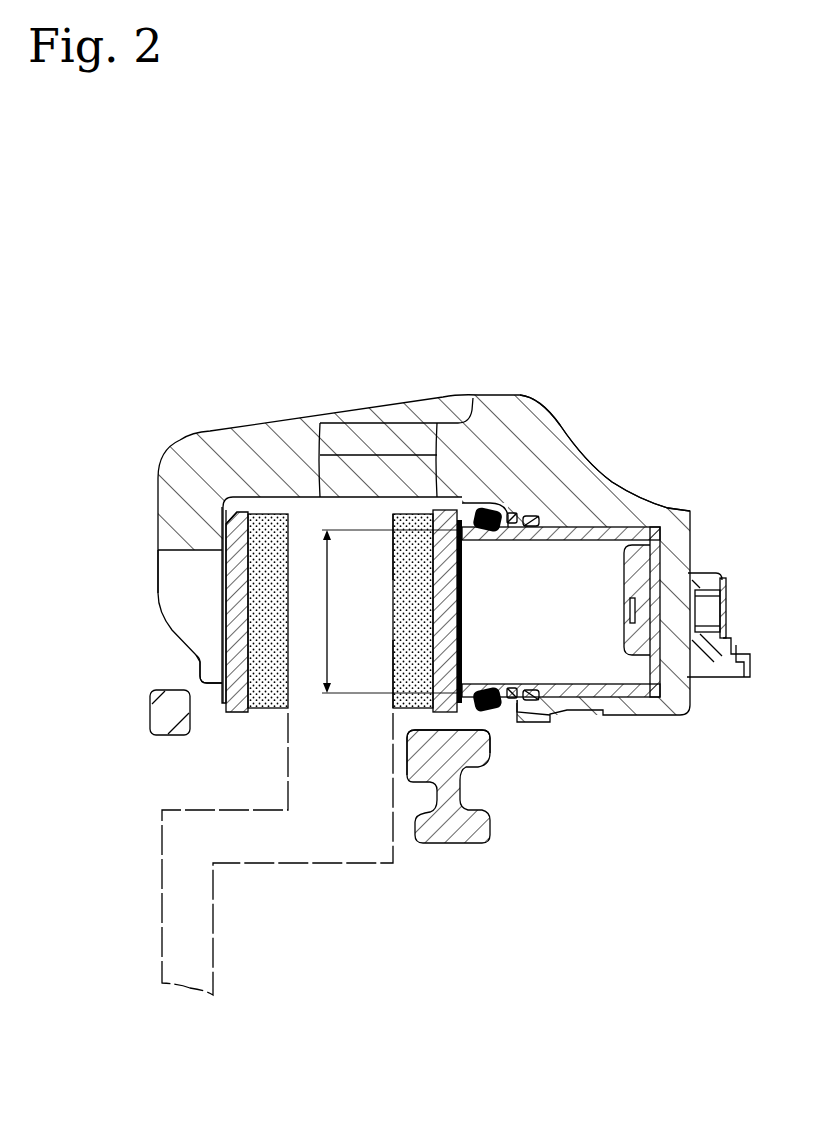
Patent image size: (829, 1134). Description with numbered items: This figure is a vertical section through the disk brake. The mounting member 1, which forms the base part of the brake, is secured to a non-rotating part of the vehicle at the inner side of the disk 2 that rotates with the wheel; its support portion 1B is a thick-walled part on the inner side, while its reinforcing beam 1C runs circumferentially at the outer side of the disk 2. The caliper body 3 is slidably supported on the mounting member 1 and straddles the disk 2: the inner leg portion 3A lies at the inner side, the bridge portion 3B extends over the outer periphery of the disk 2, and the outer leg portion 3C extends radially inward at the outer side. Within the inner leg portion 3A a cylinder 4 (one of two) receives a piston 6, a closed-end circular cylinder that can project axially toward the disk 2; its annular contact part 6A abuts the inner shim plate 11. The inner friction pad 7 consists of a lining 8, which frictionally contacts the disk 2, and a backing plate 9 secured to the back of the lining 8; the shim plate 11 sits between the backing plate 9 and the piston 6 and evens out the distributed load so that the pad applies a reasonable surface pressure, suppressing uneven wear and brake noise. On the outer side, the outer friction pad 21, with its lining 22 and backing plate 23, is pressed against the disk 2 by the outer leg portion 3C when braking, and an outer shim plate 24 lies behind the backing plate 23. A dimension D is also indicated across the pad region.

The mounting member 1 is at (483, 828).
The support portion 1B is at (482, 749).
The reinforcing beam 1C is at (158, 727).
The disk 2 is at (298, 778).
The caliper body 3 is at (501, 410).
The inner leg portion 3A is at (540, 493).
The bridge portion 3B is at (300, 440).
The outer leg portion 3C is at (166, 523).
The cylinder 4 is at (613, 697).
The piston 6 is at (634, 545).
The annular contact part 6A is at (448, 520).
The friction pad 7 is at (417, 520).
The lining 8 is at (402, 653).
The backing plate 9 is at (415, 568).
The inner shim plate 11 is at (440, 605).
The outer friction pad 21 is at (267, 517).
The lining 22 is at (262, 563).
The backing plate 23 is at (236, 614).
The outer shim plate 24 is at (200, 658).
The diameter dimension D is at (383, 611).